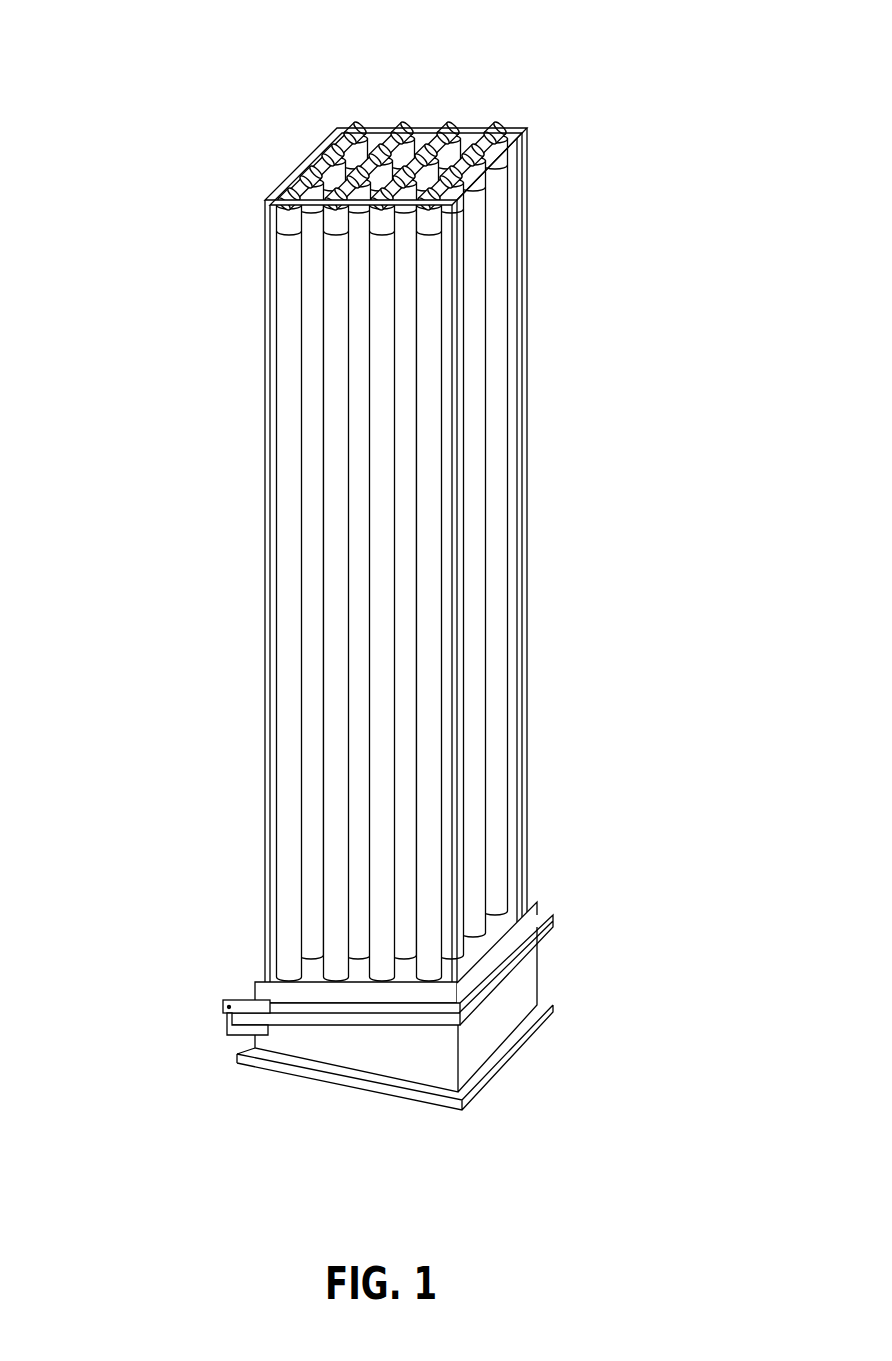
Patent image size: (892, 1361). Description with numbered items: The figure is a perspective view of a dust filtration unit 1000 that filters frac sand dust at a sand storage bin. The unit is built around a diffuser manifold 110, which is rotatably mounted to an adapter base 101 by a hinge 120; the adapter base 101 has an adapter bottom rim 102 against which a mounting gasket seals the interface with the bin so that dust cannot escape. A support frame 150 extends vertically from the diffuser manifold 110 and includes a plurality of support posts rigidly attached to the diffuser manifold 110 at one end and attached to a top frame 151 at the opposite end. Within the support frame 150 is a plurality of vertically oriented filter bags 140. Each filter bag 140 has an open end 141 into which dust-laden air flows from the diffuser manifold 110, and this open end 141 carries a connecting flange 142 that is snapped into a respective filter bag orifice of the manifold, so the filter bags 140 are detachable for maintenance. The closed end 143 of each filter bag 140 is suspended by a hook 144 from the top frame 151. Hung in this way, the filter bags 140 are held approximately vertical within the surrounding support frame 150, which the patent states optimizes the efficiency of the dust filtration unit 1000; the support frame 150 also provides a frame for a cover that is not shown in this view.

The dust filtration unit 1000 is at (160, 278).
The adapter base 101 is at (551, 957).
The adapter bottom rim 102 is at (513, 1065).
The diffuser manifold 110 is at (257, 990).
The hinge 120 is at (226, 1019).
The filter bags 140 is at (447, 553).
The open end 141 is at (497, 898).
The connecting flange 142 is at (549, 913).
The closed end 143 is at (502, 164).
The hook 144 is at (402, 130).
The support frame 150 is at (265, 520).
The top frame 151 is at (466, 128).